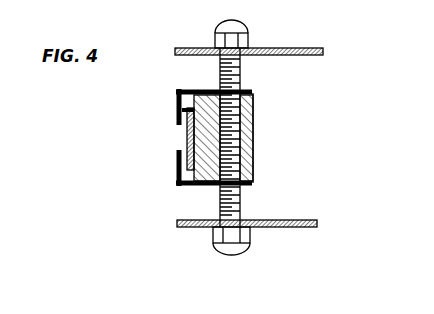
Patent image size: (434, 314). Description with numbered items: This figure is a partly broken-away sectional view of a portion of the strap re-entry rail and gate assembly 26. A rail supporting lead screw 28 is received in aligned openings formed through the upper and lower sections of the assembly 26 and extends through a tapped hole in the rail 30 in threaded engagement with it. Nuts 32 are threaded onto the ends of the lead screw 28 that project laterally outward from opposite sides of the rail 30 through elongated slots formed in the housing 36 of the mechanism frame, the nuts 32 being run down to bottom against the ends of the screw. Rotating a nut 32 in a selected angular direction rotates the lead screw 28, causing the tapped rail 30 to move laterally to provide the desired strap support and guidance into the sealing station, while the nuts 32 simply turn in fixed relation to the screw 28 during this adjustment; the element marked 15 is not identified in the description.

The mounting tongue / flange 15 is at (187, 134).
The assembly 26 is at (175, 189).
The lead screw 28 is at (242, 72).
The rail 30 is at (253, 135).
The nut 32 is at (247, 43).
The housing 36 is at (188, 228).